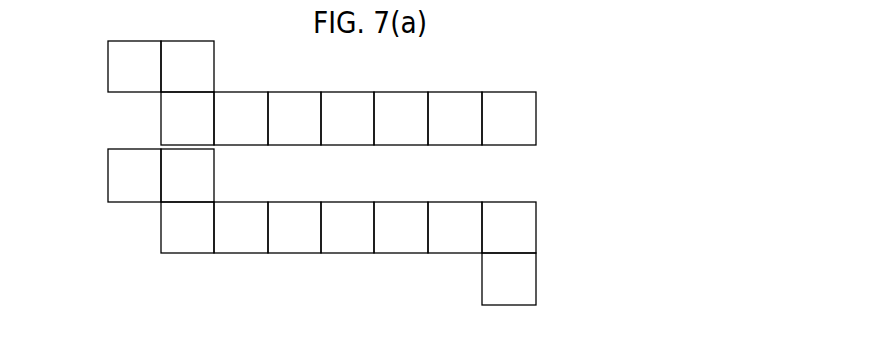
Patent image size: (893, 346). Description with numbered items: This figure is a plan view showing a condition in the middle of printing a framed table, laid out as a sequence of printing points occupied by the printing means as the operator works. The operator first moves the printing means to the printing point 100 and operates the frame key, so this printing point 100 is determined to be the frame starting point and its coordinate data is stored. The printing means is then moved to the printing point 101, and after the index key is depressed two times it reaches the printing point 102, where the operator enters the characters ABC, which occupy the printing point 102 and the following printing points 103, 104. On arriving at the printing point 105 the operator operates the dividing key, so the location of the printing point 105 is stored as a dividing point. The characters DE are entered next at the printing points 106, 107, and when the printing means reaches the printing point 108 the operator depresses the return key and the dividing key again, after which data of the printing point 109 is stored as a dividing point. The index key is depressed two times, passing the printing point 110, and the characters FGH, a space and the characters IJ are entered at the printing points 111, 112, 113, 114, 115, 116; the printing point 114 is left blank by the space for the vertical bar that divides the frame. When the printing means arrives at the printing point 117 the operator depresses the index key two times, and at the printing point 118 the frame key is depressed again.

The printing point 100 is at (112, 65).
The printing point 101 is at (214, 42).
The printing point 102 is at (161, 112).
The character cell B 103 is at (231, 92).
The character cell C 104 is at (294, 92).
The printing point 105 is at (343, 92).
The character cell D 106 is at (392, 92).
The character cell E 107 is at (447, 92).
The printing point 108 is at (505, 92).
The printing point 109 is at (108, 174).
The header cell 110 is at (212, 179).
The printing point 111 is at (163, 235).
The printing point 112 is at (240, 255).
The printing point 113 is at (298, 253).
The printing point 114 is at (340, 253).
The printing point 115 is at (412, 253).
The printing point 116 is at (458, 253).
The printing point 117 is at (533, 200).
The printing point 118 is at (522, 285).